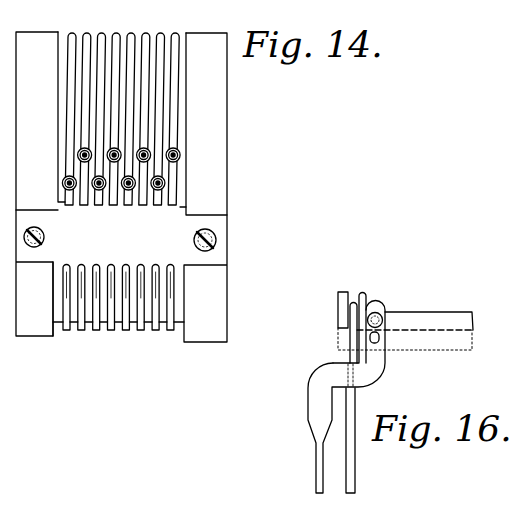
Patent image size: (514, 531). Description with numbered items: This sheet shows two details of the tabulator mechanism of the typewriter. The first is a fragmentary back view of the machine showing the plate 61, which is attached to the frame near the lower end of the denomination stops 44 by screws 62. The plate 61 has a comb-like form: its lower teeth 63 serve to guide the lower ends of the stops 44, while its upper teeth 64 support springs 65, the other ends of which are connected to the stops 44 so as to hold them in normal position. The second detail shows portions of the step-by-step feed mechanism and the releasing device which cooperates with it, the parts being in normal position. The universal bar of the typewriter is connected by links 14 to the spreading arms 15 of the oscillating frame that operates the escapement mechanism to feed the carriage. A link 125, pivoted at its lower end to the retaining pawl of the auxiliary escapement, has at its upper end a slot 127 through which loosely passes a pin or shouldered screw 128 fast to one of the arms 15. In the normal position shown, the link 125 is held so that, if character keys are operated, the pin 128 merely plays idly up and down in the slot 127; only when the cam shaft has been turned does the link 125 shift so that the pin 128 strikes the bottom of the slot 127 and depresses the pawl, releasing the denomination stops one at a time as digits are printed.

In FIG. 14, the denomination stops 44 is at (103, 36).
In FIG. 14, the plate 61 is at (227, 228).
In FIG. 14, the screws 62 is at (194, 245).
In FIG. 14, the lower teeth 63 is at (100, 328).
In FIG. 14, the upper teeth 64 is at (100, 207).
In FIG. 14, the springs 65 is at (78, 155).
In FIG. 16, the links 14 is at (364, 474).
In FIG. 16, the spreading arms 15 is at (454, 317).
In FIG. 16, the link 125 is at (318, 464).
In FIG. 16, the slot 127 is at (381, 339).
In FIG. 16, the pin or shouldered screw 128 is at (379, 314).